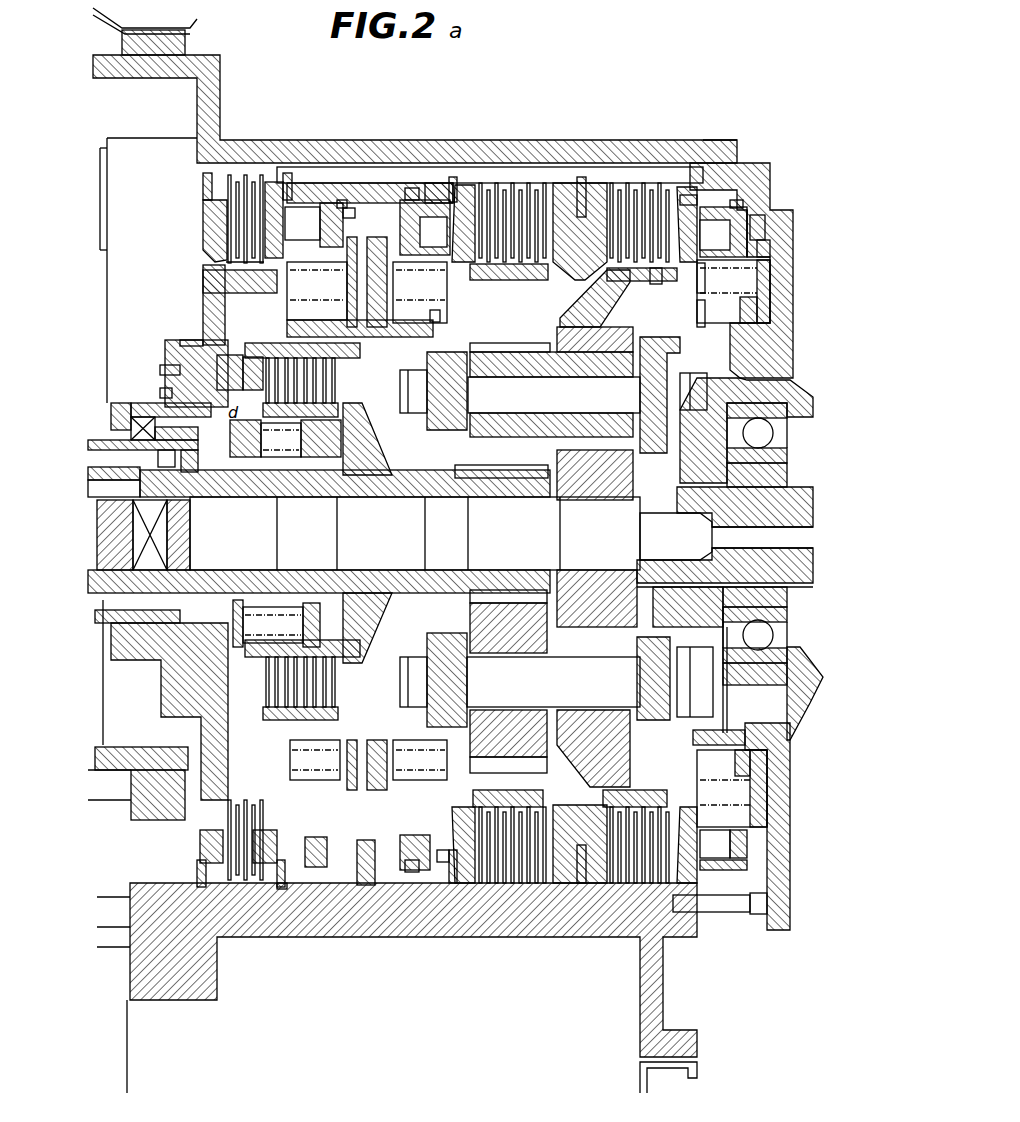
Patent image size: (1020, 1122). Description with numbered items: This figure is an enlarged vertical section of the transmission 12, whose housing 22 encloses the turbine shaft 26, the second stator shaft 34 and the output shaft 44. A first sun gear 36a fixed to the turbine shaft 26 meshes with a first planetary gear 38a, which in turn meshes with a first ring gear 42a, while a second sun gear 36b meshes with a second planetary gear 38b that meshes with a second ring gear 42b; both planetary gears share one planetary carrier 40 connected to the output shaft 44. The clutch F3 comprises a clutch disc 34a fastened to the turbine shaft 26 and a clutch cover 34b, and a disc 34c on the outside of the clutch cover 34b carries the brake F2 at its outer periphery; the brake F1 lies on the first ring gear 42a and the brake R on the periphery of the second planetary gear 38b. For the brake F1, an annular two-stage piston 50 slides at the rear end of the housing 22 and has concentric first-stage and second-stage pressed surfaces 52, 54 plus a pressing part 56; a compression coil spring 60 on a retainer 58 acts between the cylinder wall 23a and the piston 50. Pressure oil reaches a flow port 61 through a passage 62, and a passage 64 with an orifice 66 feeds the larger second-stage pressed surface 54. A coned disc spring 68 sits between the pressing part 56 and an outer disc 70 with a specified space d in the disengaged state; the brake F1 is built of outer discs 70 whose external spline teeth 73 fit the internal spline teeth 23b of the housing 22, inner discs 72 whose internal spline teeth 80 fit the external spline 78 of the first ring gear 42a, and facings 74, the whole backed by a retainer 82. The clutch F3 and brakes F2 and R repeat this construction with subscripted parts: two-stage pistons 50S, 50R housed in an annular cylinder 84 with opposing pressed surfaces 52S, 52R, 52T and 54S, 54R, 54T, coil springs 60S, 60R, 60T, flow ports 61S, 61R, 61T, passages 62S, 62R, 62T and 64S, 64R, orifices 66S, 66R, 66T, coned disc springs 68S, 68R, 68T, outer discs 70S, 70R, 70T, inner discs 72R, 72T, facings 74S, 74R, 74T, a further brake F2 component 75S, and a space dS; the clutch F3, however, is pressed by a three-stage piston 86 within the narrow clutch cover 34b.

The transmission 12 is at (566, 72).
The housing 22 is at (328, 152).
The cylinder wall 23a is at (728, 332).
The internal spline tooth 23b is at (588, 180).
The turbine shaft 26 is at (522, 537).
The second stator shaft 34 is at (394, 478).
The clutch disc 34a is at (366, 440).
The clutch cover 34b is at (180, 378).
The disc 34c is at (215, 312).
The first sun gear 36a is at (612, 491).
The second sun gear 36b is at (458, 467).
The first planetary gear 38a is at (530, 352).
The second planetary gear 38b is at (525, 641).
The planetary carrier 40 is at (693, 618).
The first ring gear 42a is at (614, 328).
The second ring gear 42b is at (503, 345).
The output shaft 44 is at (778, 522).
The two-stage piston 50 is at (750, 205).
The two-stage piston 50S is at (342, 230).
The two-stage piston 50R is at (430, 195).
The first-stage pressed surface 52 is at (765, 225).
The first-stage pressed surface 52S is at (340, 200).
The first-stage pressed surface 52R is at (412, 190).
The first-stage pressed surface 52T is at (172, 393).
The second-stage pressed surface 54 is at (788, 280).
The second-stage pressed surface 54S is at (370, 240).
The second-stage pressed surface 54R is at (362, 745).
The second-stage pressed surface 54T is at (172, 368).
The pressing part 56 is at (705, 215).
The retainer 58 is at (700, 305).
The compression coil spring 60 is at (780, 303).
The compression coil spring 60S is at (300, 335).
The compression coil spring 60R is at (438, 322).
The compression coil spring 60T is at (305, 485).
The flow port 61 is at (735, 866).
The flow port 61S is at (284, 890).
The flow port 61R is at (440, 860).
The flow port 61T is at (130, 415).
The passage 62 is at (736, 905).
The passage 62S is at (355, 875).
The passage 62R is at (410, 870).
The passage 62T is at (125, 432).
The passage 64 is at (768, 245).
The passage 64S is at (340, 215).
The passage 64R is at (410, 200).
The orifice 66 is at (786, 255).
The orifice 66S is at (317, 291).
The orifice 66R is at (420, 292).
The orifice 66T is at (203, 343).
The coned disc spring 68 is at (683, 200).
The coned disc spring 68S is at (272, 185).
The coned disc spring 68R is at (472, 185).
The coned disc spring 68T is at (245, 462).
The outer disc 70 is at (676, 185).
The outer disc 70S is at (212, 212).
The outer disc 70R is at (560, 205).
The outer disc 70T is at (247, 692).
The inner disc 72 is at (633, 185).
The inner disc 72R is at (517, 210).
The inner disc 72T is at (272, 690).
The external spline tooth 73 is at (628, 185).
The facing 74 is at (652, 185).
The facing 74S is at (237, 255).
The facing 74R is at (500, 200).
The facing 74T is at (258, 697).
The end plate 75S is at (252, 255).
The external spline 78 is at (688, 280).
The internal spline tooth 80 is at (658, 283).
The retainer 82 is at (595, 245).
The annular cylinder 84 is at (447, 335).
The three-stage piston 86 is at (232, 358).
The brake F1 is at (612, 118).
The brake F2 is at (262, 118).
The clutch F3 is at (370, 380).
The brake R is at (481, 118).
The specified space d is at (715, 235).
The specified space dS is at (302, 223).